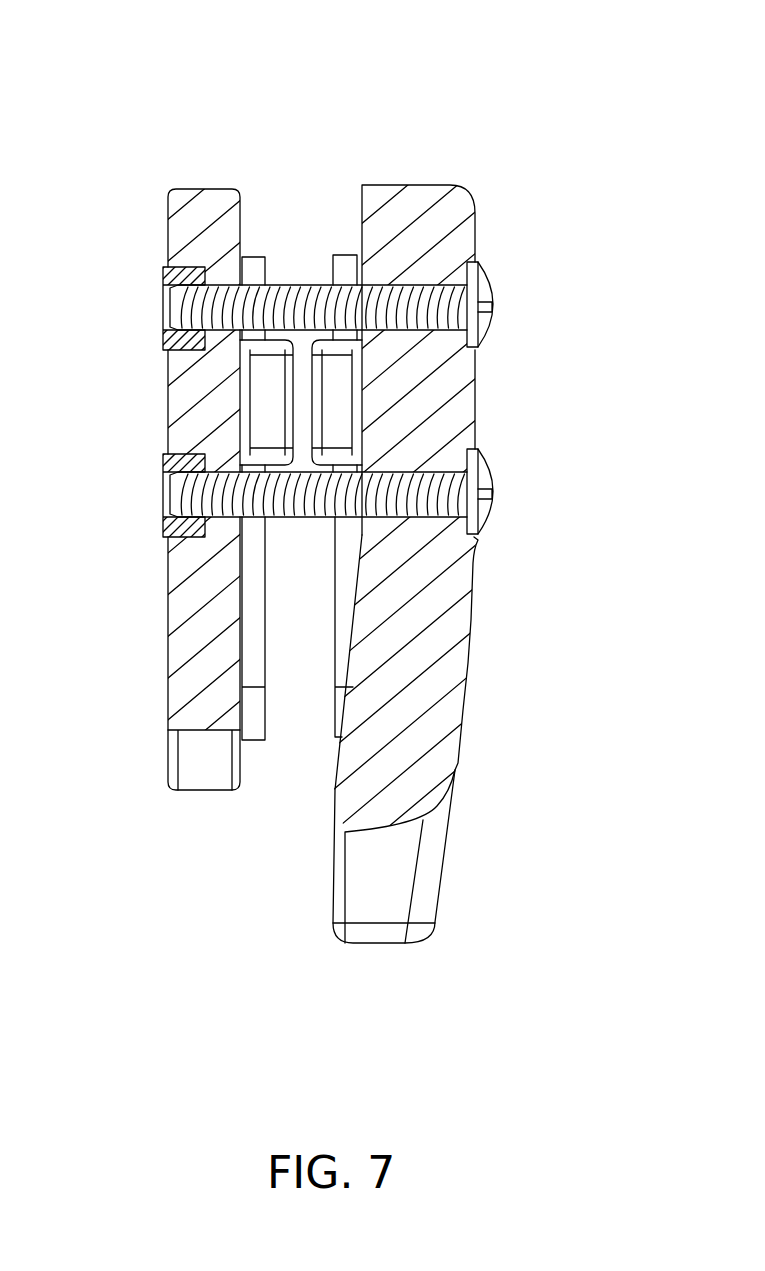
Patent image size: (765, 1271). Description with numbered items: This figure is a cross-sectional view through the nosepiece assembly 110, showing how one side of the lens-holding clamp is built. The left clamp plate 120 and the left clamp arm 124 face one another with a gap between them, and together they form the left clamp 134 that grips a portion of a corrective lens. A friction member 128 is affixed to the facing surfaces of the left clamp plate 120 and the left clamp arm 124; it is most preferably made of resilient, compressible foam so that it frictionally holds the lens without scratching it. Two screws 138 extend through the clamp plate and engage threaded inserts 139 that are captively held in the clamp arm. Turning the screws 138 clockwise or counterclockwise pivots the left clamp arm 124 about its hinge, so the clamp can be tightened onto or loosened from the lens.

The nosepiece assembly 110 is at (547, 70).
The left clamp plate 120 is at (463, 710).
The left clamp arm 124 is at (186, 189).
The friction member 128 is at (258, 256).
The left clamp 134 is at (305, 232).
The screws 138 is at (493, 284).
The threaded inserts 139 is at (160, 297).